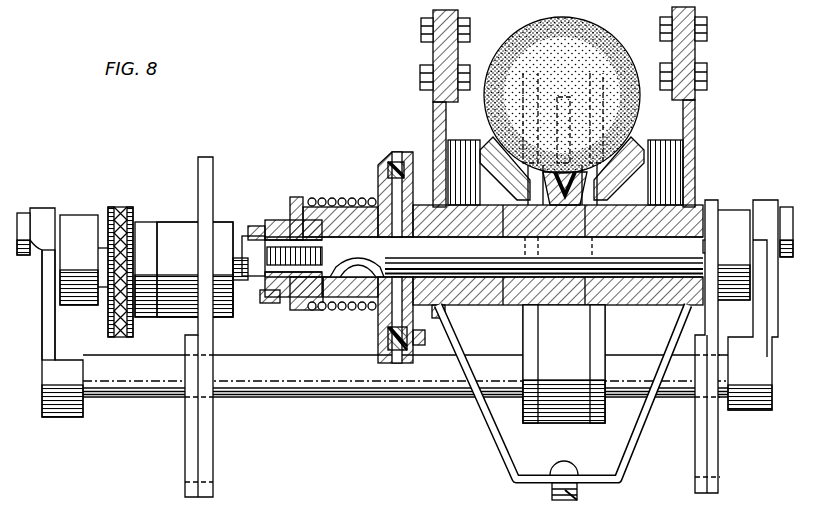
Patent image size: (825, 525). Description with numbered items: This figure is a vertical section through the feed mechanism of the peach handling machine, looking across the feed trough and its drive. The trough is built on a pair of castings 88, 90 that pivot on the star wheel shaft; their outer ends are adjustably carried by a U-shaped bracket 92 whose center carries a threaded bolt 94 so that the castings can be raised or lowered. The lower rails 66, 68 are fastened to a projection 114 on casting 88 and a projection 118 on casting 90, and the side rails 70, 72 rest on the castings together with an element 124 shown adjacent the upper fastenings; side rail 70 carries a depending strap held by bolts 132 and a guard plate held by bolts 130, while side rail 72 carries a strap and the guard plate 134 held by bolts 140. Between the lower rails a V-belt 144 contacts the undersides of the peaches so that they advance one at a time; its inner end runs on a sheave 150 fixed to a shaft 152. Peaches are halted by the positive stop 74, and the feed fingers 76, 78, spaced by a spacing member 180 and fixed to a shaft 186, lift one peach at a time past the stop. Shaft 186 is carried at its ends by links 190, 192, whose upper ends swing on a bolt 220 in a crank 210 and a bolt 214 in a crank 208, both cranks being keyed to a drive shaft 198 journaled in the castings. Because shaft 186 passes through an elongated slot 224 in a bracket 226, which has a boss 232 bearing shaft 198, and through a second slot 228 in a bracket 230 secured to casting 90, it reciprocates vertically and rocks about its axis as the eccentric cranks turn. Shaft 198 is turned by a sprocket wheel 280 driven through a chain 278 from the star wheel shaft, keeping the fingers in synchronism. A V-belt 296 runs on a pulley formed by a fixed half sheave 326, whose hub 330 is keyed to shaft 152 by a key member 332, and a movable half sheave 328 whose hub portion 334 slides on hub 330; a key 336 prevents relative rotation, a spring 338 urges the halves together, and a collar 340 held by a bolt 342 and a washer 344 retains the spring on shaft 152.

The lower rail 66 is at (495, 176).
The lower rail 68 is at (653, 157).
The side rail 70 is at (463, 65).
The side rail 72 is at (666, 63).
The positive stop 74 is at (565, 95).
The feed finger 76 is at (620, 105).
The feed finger 78 is at (528, 72).
The casting 88 is at (433, 50).
The casting 90 is at (698, 129).
The U-shaped bracket 92 is at (500, 452).
The threaded bolt 94 is at (580, 490).
The projection 114 is at (460, 162).
The projection 118 is at (658, 180).
The nut 124 is at (500, 35).
The bolt 130 is at (421, 29).
The bolt 132 is at (420, 78).
The guard plate 134 is at (660, 25).
The bolt 140 is at (708, 78).
The V-belt 144 is at (560, 348).
The sheave 150 is at (545, 314).
The shaft 152 is at (668, 257).
The spacing member 180 is at (572, 410).
The shaft 186 is at (233, 380).
The link 190 is at (760, 316).
The link 192 is at (40, 223).
The drive shaft 198 is at (57, 310).
The crank 208 is at (75, 227).
The crank 210 is at (790, 197).
The bolt 214 is at (24, 212).
The bolt 220 is at (790, 226).
The elongated slot 224 is at (192, 478).
The bracket 226 is at (205, 453).
The slot 228 is at (711, 477).
The bracket 230 is at (718, 438).
The boss 232 is at (173, 235).
The chain 278 is at (121, 207).
The sprocket wheel 280 is at (140, 227).
The V-belt 296 is at (400, 152).
The fixed half sheave 326 is at (420, 345).
The movable half sheave 328 is at (380, 350).
The hub 330 is at (335, 195).
The key member 332 is at (383, 262).
The hub portion 334 is at (336, 312).
The key 336 is at (355, 198).
The spring 338 is at (297, 208).
The collar 340 is at (268, 220).
The bolt 342 is at (257, 235).
The washer 344 is at (268, 297).